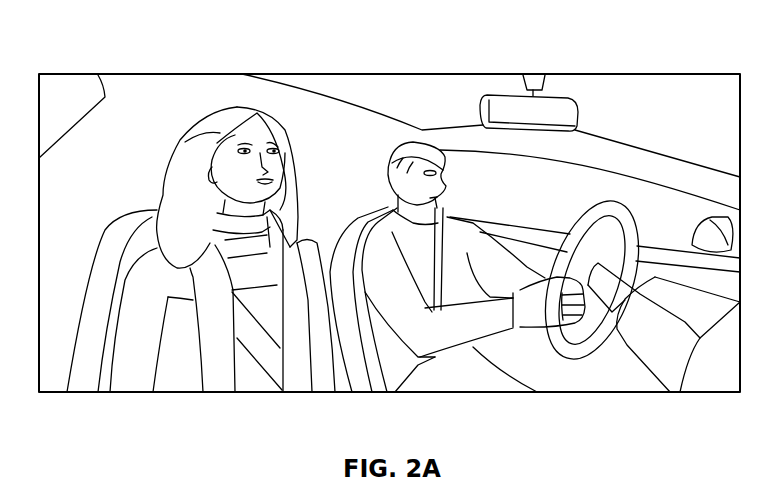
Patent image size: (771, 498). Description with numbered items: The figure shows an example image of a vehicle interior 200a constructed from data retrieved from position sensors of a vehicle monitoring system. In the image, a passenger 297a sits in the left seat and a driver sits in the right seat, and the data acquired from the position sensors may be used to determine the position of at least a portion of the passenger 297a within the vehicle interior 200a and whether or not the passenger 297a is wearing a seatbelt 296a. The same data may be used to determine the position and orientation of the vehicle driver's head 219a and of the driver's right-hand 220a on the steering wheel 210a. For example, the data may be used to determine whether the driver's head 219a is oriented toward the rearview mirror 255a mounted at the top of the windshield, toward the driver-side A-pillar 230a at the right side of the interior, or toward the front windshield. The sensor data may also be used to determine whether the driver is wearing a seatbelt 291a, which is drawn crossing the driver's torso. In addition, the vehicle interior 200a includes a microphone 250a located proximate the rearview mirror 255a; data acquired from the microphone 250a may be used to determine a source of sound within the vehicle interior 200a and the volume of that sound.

The vehicle interior 200a is at (115, 44).
The vehicle driver's head 219a is at (420, 143).
The seatbelt 291a is at (440, 250).
The microphone 250a is at (536, 76).
The rearview mirror 255a is at (565, 115).
The steering wheel 210a is at (625, 208).
The driver-side A-pillar 230a is at (683, 175).
The passenger 297a is at (138, 348).
The seatbelt 296a is at (258, 348).
The right-hand 220a is at (557, 305).